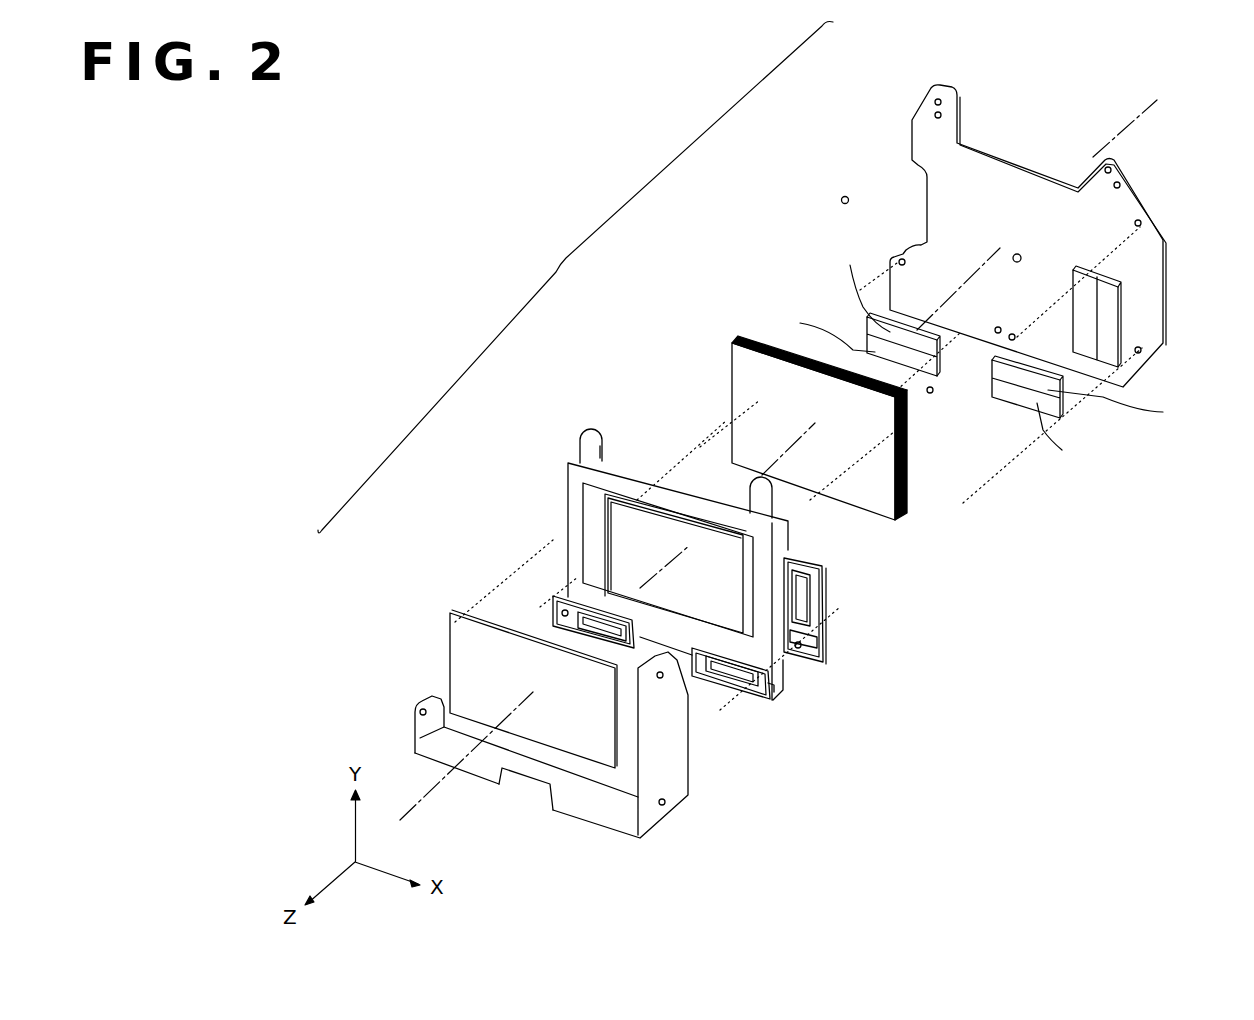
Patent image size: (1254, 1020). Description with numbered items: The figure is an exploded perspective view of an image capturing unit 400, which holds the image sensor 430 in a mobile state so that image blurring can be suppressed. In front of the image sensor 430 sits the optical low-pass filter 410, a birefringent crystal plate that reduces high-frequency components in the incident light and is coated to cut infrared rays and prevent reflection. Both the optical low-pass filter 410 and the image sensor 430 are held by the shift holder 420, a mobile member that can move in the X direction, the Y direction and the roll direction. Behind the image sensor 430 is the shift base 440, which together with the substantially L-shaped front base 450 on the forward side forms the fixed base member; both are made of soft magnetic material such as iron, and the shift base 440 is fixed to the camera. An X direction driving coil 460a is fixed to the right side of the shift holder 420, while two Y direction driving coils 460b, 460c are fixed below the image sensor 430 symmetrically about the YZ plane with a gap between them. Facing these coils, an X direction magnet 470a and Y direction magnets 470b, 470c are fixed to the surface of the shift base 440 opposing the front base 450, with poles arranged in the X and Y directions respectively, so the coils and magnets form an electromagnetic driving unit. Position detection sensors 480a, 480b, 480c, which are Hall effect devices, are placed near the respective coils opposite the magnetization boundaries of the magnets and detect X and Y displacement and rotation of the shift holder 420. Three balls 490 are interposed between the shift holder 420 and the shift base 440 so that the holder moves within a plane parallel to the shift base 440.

The image capturing unit 400 is at (575, 278).
The optical low-pass filter 410 is at (457, 642).
The shift holder 420 is at (577, 475).
The image sensor 430 is at (740, 370).
The shift base 440 is at (922, 130).
The front base 450 is at (486, 777).
The X direction driving coil 460a is at (808, 587).
The Y direction driving coil 460b is at (562, 600).
The Y direction driving coil 460c is at (732, 683).
The X direction magnet 470a is at (1113, 298).
The Y direction magnet 470b is at (884, 338).
The Y direction magnet 470c is at (1052, 410).
The position detection sensor 480a is at (813, 643).
The position detection sensor 480b is at (563, 612).
The position detection sensor 480c is at (773, 683).
The balls 490 is at (842, 198).